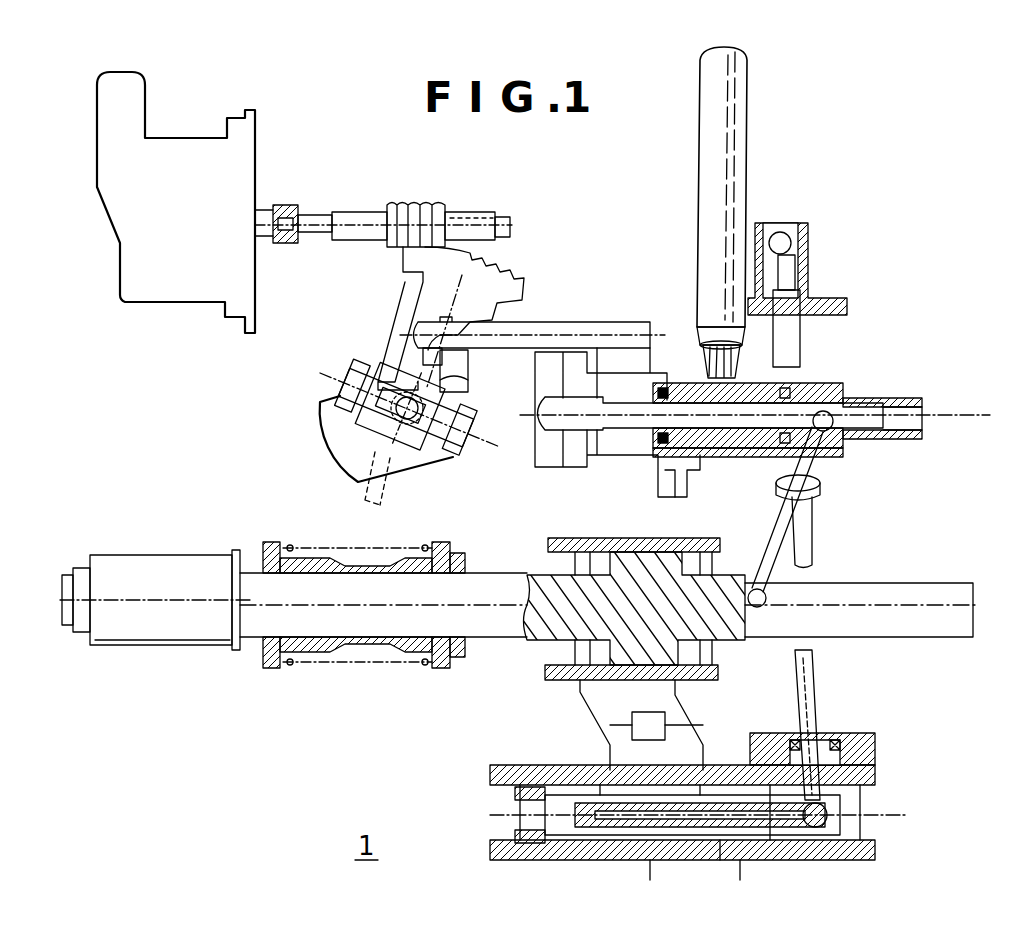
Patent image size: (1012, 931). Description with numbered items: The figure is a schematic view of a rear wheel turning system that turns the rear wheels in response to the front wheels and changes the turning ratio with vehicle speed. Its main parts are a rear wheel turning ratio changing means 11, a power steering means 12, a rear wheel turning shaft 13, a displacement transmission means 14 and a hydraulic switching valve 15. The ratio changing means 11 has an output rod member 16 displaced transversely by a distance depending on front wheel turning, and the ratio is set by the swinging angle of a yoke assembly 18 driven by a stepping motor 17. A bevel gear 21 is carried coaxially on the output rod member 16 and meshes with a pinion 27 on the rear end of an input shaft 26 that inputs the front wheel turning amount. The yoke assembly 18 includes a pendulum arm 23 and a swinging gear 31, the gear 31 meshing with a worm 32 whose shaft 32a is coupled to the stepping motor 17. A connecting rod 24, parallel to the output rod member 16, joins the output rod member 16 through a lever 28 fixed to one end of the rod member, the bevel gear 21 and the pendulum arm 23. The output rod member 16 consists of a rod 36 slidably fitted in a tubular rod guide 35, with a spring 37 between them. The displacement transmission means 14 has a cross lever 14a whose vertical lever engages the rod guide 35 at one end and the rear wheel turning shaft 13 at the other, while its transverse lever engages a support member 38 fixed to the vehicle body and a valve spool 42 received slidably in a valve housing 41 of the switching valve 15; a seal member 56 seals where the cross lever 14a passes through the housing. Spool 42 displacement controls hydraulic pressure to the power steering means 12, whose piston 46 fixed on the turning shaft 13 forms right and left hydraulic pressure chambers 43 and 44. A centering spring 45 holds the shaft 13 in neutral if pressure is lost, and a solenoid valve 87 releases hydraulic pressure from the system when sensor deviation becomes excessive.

The rear wheel turning ratio changing means 11 is at (495, 470).
The power steering means 12 is at (550, 700).
The rear wheel turning shaft 13 is at (178, 648).
The displacement transmission means 14 is at (828, 525).
The cross lever 14a is at (812, 545).
The hydraulic switching valve 15 is at (632, 880).
The output rod member 16 is at (872, 447).
The stepping motor 17 is at (150, 302).
The yoke assembly 18 is at (535, 272).
The bevel gear 21 is at (678, 490).
The pendulum arm 23 is at (468, 376).
The connecting rod 24 is at (605, 318).
The input shaft 26 is at (722, 122).
The pinion 27 is at (745, 352).
The lever 28 is at (545, 380).
The swinging gear 31 is at (403, 253).
The worm 32 is at (420, 205).
The shaft of the worm 32a is at (478, 212).
The tubular rod guide 35 is at (835, 385).
The rod 36 is at (880, 405).
The spring 37 is at (708, 458).
The support member 38 is at (810, 282).
The valve housing 41 is at (870, 750).
The valve spool 42 is at (780, 862).
The right hydraulic pressure chamber 43 is at (680, 662).
The left hydraulic pressure chamber 44 is at (565, 655).
The centering spring 45 is at (368, 672).
The piston 46 is at (600, 540).
The seal member 56 is at (850, 733).
The solenoid valve 87 is at (615, 738).